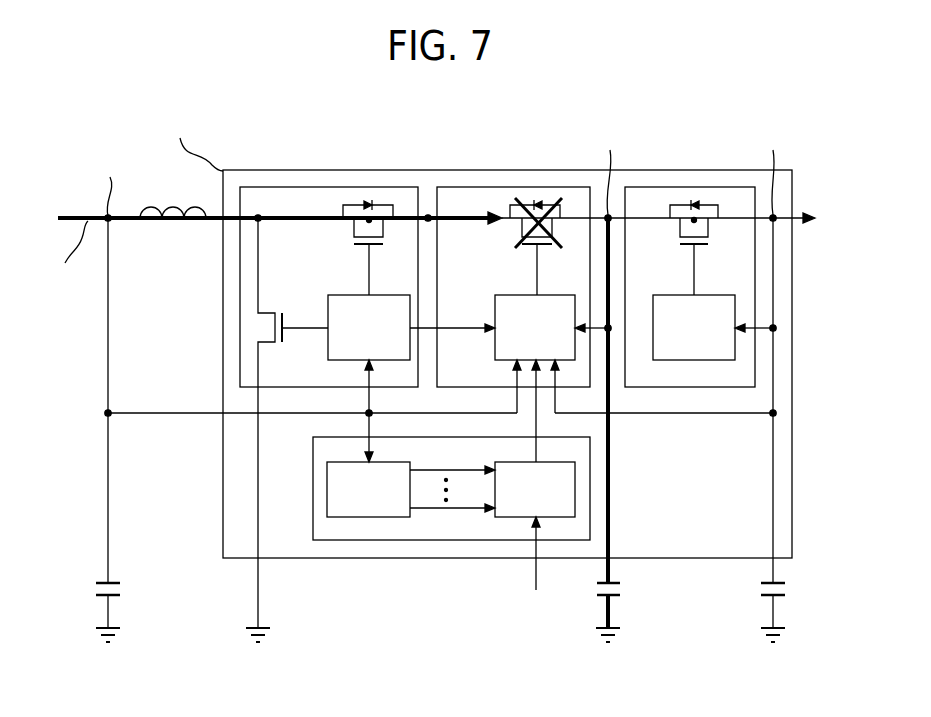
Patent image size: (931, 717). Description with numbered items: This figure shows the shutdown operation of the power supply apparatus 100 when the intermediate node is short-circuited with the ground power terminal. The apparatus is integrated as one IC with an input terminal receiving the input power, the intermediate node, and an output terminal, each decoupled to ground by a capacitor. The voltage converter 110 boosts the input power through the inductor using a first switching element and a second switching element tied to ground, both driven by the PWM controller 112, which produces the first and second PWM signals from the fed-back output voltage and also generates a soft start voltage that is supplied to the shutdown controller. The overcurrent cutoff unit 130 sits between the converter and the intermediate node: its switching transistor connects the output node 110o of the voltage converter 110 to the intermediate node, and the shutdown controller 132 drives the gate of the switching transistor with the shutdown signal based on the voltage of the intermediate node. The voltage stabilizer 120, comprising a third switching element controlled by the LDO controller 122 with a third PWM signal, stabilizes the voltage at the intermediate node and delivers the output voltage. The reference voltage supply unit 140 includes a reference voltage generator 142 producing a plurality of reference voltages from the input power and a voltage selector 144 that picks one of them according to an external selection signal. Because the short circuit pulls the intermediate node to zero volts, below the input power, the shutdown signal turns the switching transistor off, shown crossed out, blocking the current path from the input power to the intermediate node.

The power supply apparatus 100 is at (88, 104).
The voltage converter 110 is at (313, 186).
The output node of the voltage converter 110o is at (428, 215).
The PWM controller 112 is at (357, 338).
The voltage stabilizer 120 is at (688, 186).
The LDO controller 122 is at (682, 338).
The overcurrent cutoff unit 130 is at (528, 186).
The shutdown controller 132 is at (523, 338).
The reference voltage supply unit 140 is at (447, 541).
The reference voltage generator 142 is at (357, 500).
The voltage selector 144 is at (523, 500).